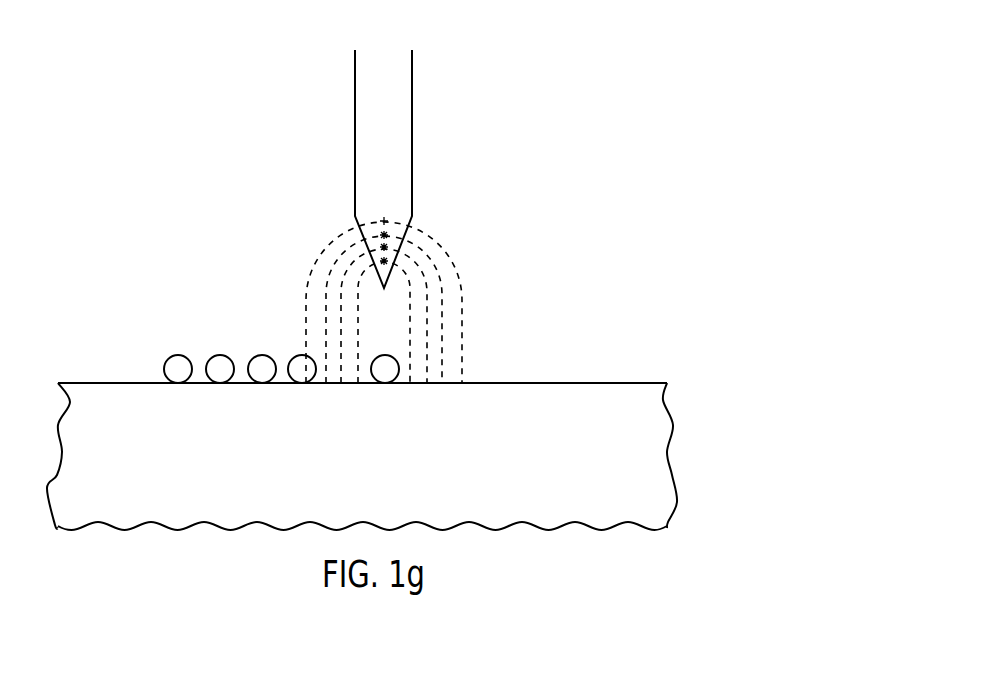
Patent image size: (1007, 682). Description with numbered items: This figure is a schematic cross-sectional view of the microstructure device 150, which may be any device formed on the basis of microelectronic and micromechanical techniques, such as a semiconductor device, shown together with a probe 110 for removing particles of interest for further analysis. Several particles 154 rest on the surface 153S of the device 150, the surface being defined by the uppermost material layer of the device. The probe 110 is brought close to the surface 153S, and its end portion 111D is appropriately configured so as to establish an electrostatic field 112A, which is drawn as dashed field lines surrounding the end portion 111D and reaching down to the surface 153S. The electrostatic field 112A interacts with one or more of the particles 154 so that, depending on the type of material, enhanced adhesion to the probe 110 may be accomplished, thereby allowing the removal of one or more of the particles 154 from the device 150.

The probe 110 is at (412, 105).
The end portion 111D is at (409, 225).
The electrostatic field 112A is at (462, 316).
The particles 154 is at (248, 355).
The surface 153S is at (633, 382).
The microstructure device 150 is at (670, 105).